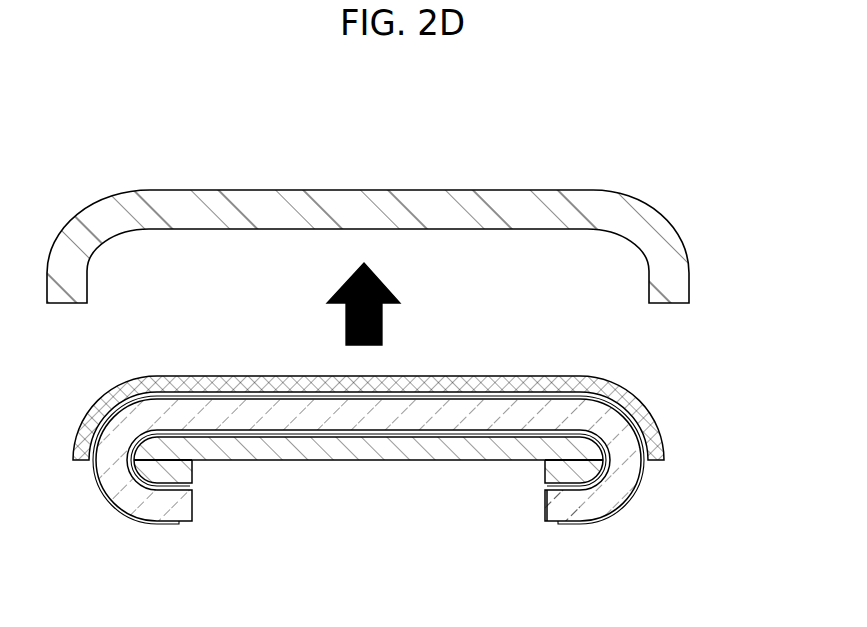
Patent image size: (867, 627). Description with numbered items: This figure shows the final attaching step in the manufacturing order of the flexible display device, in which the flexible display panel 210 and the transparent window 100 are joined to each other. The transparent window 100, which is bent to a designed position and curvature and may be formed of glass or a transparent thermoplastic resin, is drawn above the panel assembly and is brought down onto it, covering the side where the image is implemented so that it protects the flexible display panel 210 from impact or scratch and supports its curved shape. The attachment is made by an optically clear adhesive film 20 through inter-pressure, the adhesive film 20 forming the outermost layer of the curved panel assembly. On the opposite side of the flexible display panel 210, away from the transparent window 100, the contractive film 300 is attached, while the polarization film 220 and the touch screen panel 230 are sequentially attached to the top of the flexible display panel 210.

The transparent window 100 is at (623, 210).
The optically clear adhesive film 20 is at (643, 400).
The flexible display panel 210 is at (607, 468).
The polarization film 220 is at (547, 500).
The touch screen panel 230 is at (567, 528).
The contractive film 300 is at (321, 452).